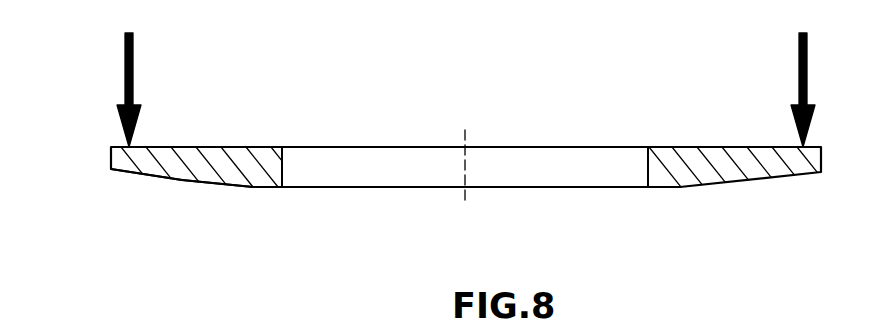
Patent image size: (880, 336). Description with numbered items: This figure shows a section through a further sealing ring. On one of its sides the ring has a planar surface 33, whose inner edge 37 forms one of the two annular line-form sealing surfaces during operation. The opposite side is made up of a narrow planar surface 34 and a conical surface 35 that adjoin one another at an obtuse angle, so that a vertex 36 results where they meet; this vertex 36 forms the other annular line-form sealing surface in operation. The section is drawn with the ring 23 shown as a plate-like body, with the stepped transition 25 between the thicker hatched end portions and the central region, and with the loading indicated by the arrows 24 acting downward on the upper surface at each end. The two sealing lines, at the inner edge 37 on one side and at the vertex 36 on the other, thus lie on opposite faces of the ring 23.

The test plate / substrate 23 is at (110, 157).
The applied load / force 24 is at (133, 57).
The step / shoulder 25 is at (284, 174).
The planar surface 33 is at (197, 147).
The narrow planar surface 34 is at (263, 187).
The conical surface 35 is at (182, 180).
The vertex 36 is at (253, 187).
The inner edge 37 is at (283, 147).